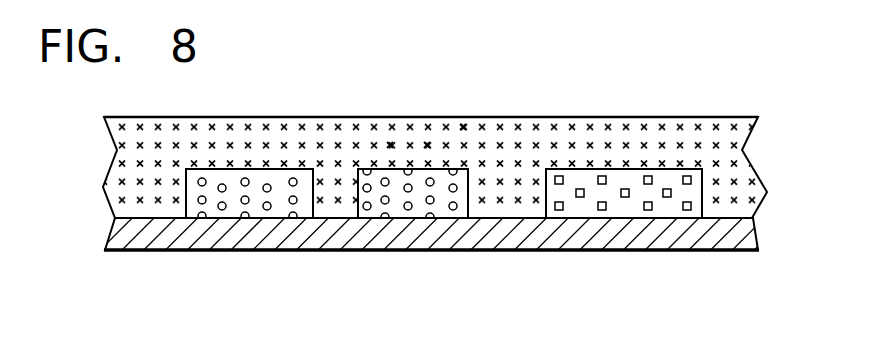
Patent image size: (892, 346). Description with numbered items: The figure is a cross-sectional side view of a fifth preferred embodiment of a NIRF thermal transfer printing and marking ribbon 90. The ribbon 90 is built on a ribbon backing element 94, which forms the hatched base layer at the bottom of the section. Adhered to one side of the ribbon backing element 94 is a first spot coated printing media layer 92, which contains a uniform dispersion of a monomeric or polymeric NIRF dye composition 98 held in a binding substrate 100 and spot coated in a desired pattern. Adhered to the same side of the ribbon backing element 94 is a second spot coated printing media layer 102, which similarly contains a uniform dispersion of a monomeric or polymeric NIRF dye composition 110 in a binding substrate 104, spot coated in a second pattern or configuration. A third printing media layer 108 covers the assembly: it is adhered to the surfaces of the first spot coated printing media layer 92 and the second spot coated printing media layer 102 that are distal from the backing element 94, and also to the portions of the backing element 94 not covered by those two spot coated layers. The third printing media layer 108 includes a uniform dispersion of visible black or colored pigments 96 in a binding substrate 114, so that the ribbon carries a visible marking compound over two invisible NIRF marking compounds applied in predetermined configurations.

The NIRF thermal transfer printing and marking ribbon 90 is at (603, 103).
The first spot coated printing media layer 92 is at (358, 218).
The ribbon backing element 94 is at (472, 240).
The visible black or colored pigments 96 is at (465, 128).
The NIRF dye composition 98 is at (267, 210).
The binding substrate 100 is at (198, 217).
The second spot coated printing media layer 102 is at (563, 218).
The binding substrate 104 is at (618, 205).
The third printing media layer 108 is at (266, 115).
The NIRF dye composition 110 is at (687, 210).
The binding substrate 114 is at (510, 140).